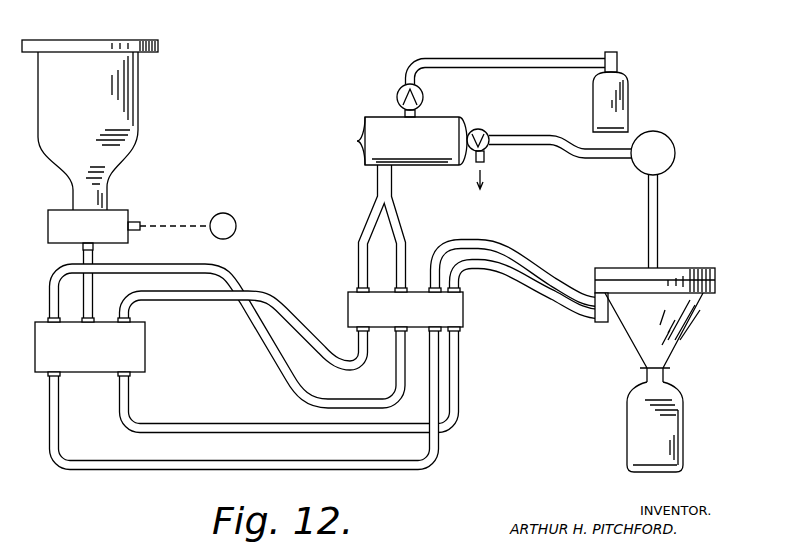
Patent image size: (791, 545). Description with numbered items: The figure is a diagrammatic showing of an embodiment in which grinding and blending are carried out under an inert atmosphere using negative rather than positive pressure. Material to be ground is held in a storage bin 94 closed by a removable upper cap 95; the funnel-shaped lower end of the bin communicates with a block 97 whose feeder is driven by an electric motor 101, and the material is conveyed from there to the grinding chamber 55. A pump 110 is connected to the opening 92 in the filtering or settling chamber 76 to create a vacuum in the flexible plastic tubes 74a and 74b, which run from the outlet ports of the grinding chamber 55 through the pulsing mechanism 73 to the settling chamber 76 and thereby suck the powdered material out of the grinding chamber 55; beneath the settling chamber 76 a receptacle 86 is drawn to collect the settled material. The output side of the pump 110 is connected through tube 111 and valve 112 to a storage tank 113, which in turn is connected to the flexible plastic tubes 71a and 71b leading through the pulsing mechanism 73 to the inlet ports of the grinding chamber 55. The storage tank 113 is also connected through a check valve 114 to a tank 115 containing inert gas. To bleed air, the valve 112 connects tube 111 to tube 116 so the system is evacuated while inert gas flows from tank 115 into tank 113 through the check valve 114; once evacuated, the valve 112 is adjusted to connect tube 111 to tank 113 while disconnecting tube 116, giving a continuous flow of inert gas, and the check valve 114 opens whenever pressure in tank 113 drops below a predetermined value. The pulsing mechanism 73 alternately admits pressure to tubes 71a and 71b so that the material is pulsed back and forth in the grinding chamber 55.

The removable upper cap 95 is at (108, 40).
The storage bin 94 is at (128, 115).
The block 97 is at (52, 227).
The electric motor 101 is at (234, 215).
The flexible plastic tube 71a is at (146, 265).
The flexible plastic tube 71b is at (185, 301).
The grinding chamber 55 is at (96, 360).
The flexible plastic tube 74a is at (295, 460).
The flexible plastic tube 74b is at (283, 423).
The pulsing mechanism 73 is at (410, 322).
The storage tank 113 is at (412, 147).
The check valve 114 is at (396, 96).
The valve 112 is at (483, 129).
The tube 111 is at (520, 139).
The tube 116 is at (487, 156).
The tank 115 is at (629, 88).
The pump 110 is at (676, 154).
The opening 92 is at (663, 268).
The filtering or settling chamber 76 is at (656, 348).
The bottle 86 is at (683, 408).